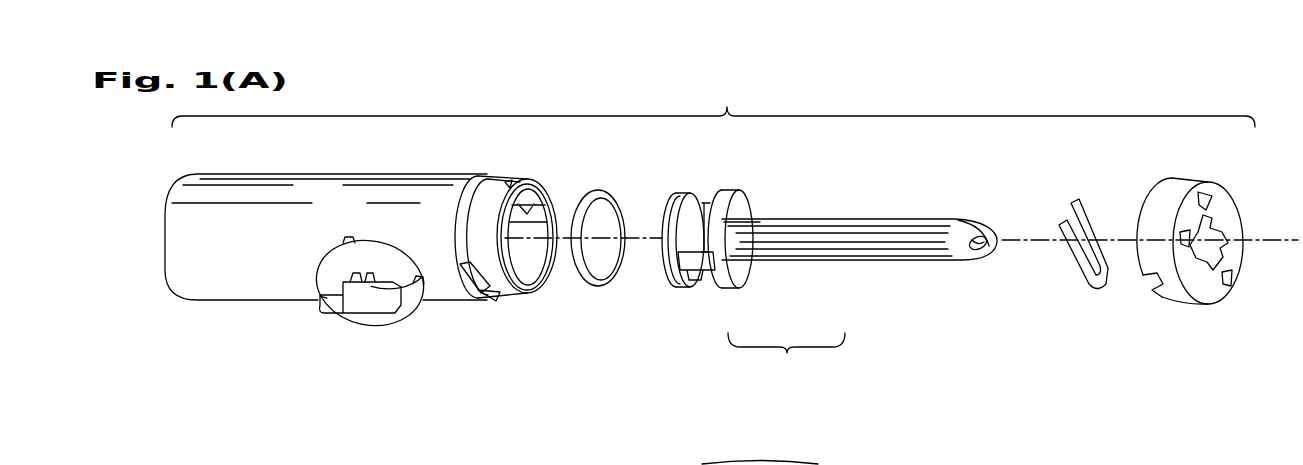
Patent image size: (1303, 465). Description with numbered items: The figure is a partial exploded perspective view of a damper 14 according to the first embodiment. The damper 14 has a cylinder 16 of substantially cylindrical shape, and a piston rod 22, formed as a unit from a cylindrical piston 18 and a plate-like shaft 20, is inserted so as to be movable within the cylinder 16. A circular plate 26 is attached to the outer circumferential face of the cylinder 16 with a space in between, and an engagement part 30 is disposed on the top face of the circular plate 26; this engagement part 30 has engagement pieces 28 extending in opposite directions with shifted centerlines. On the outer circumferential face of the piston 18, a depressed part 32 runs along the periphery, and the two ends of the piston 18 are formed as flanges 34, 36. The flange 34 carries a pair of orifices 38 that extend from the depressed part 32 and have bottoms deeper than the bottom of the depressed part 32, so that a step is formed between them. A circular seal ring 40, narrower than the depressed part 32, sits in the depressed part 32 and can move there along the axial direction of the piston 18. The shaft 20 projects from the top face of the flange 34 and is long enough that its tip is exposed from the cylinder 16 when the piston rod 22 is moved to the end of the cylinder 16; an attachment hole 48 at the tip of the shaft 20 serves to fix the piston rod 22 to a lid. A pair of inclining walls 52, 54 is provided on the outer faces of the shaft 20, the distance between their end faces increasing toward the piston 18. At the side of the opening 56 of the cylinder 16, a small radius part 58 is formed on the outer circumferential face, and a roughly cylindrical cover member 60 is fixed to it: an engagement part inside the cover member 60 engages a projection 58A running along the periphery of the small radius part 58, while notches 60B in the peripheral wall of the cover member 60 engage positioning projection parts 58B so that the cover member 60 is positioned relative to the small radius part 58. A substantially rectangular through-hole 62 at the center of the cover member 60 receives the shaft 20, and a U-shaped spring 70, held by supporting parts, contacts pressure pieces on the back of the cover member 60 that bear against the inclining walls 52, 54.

The damper 14 is at (713, 106).
The cylinder 16 is at (230, 283).
The piston 18 is at (719, 239).
The shaft 20 is at (859, 264).
The piston rod 22 is at (786, 358).
The circular plate 26 is at (402, 318).
The engagement pieces 28 is at (333, 327).
The engagement part 30 is at (315, 318).
The depressed part 32 is at (698, 202).
The flange 34 is at (748, 192).
The flange 36 is at (678, 192).
The orifices 38 is at (693, 263).
The seal ring 40 is at (598, 283).
The attachment hole 48 is at (978, 256).
The inclining wall 52 is at (767, 240).
The inclining wall 54 is at (747, 217).
The opening 56 is at (530, 203).
The small radius part 58 is at (488, 290).
The projection 58A is at (508, 183).
The positioning projection parts 58B is at (467, 273).
The cover member 60 is at (1182, 265).
The notches 60B is at (1147, 285).
The through-hole 62 is at (1213, 232).
The spring 70 is at (1080, 260).